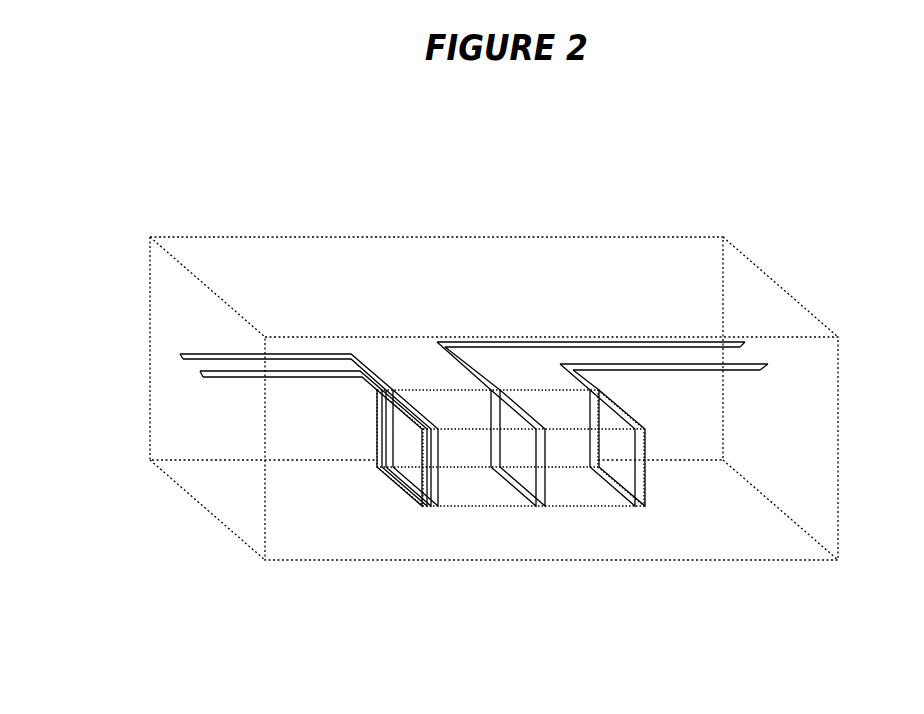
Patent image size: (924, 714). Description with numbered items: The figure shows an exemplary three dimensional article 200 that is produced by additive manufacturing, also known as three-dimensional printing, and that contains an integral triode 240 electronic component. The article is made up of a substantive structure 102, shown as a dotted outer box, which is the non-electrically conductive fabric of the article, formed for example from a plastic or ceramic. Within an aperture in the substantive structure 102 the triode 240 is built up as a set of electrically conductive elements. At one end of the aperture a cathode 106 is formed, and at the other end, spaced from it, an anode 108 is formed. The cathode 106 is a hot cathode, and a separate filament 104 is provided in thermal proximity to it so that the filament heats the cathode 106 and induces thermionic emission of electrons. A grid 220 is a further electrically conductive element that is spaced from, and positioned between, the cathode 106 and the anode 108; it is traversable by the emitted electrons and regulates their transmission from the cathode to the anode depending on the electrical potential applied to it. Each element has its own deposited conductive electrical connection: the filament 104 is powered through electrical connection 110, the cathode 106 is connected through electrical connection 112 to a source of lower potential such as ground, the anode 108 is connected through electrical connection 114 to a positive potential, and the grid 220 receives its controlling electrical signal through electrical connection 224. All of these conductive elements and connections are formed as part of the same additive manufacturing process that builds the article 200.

The three dimensional article 200 is at (688, 149).
The substantive structure 102 is at (823, 562).
The filament 104 is at (425, 488).
The cathode 106 is at (433, 507).
The anode 108 is at (640, 507).
The electrical connection 110 is at (205, 373).
The electrical connection 112 is at (190, 355).
The electrical connection 114 is at (758, 367).
The grid 220 is at (535, 507).
The electrical connection 224 is at (740, 347).
The triode 240 is at (422, 388).